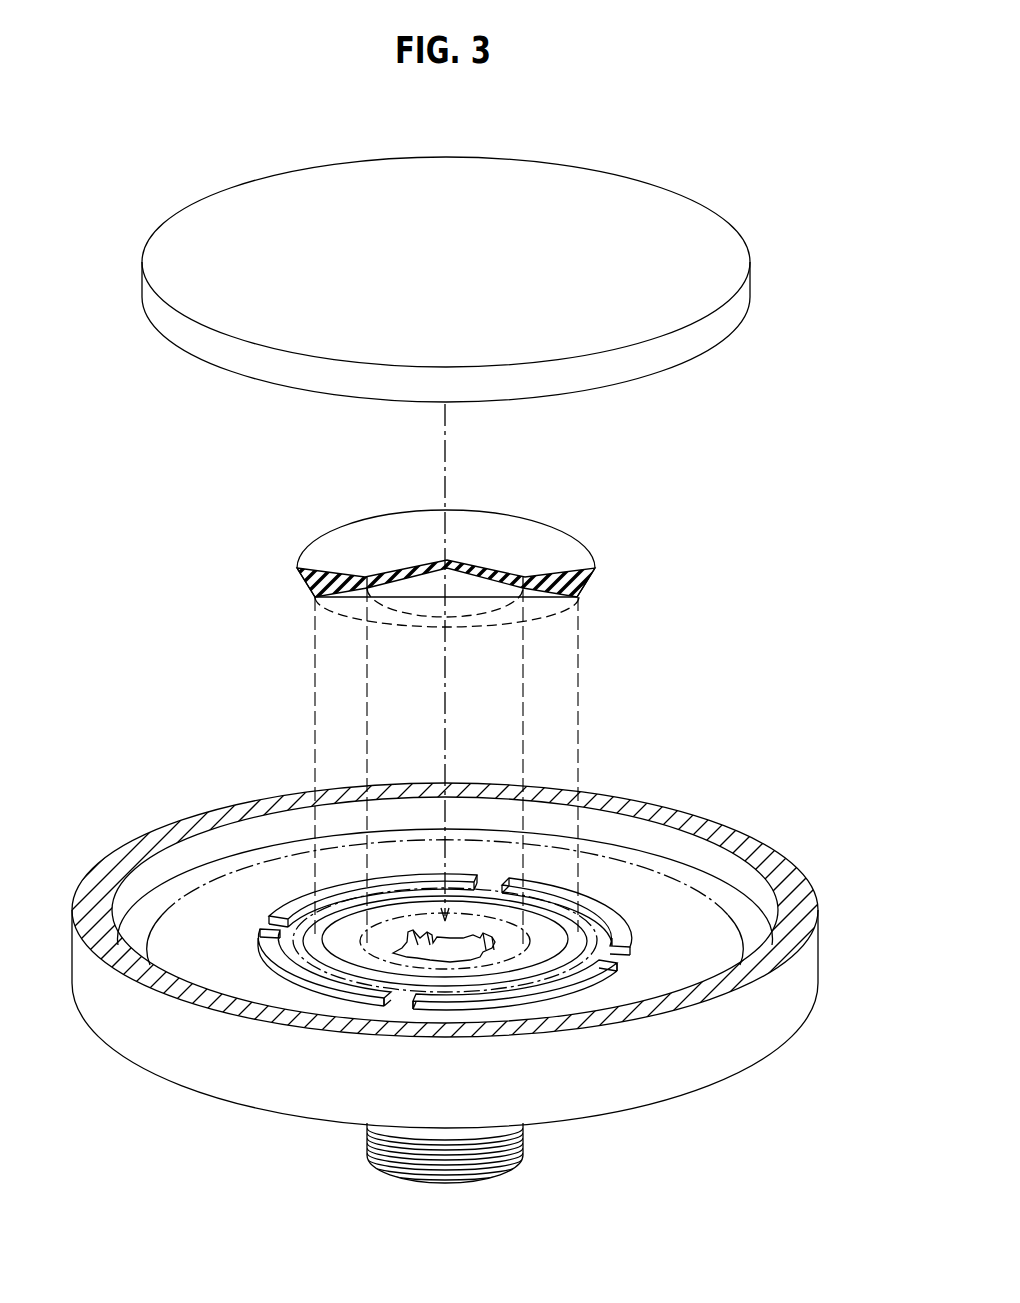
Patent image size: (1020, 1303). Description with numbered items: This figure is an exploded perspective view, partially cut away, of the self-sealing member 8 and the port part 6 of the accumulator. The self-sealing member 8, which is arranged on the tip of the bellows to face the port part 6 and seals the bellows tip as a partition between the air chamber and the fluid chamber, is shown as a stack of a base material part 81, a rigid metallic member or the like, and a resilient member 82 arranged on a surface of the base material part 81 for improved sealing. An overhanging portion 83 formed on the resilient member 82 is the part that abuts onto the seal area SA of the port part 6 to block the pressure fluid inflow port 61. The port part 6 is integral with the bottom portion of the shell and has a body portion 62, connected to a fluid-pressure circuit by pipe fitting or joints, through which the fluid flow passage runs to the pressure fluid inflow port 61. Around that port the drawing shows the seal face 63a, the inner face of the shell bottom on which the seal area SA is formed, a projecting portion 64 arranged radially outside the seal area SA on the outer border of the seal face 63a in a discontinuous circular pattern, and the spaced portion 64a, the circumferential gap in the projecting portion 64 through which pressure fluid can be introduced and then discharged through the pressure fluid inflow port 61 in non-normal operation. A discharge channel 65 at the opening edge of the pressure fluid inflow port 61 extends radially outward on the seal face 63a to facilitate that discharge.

The self-sealing member 8 is at (486, 551).
The base material part 81 is at (750, 284).
The resilient member 82 is at (491, 574).
The overhanging portion 83 is at (565, 597).
The port part 6 is at (232, 946).
The pressure fluid inflow port 61 is at (452, 942).
The body portion 62 is at (523, 1135).
The seal face 63a is at (597, 937).
The projecting portion 64 is at (345, 892).
The spaced portion 64a is at (273, 913).
The discharge channel 65 is at (409, 931).
The seal area SA is at (293, 887).